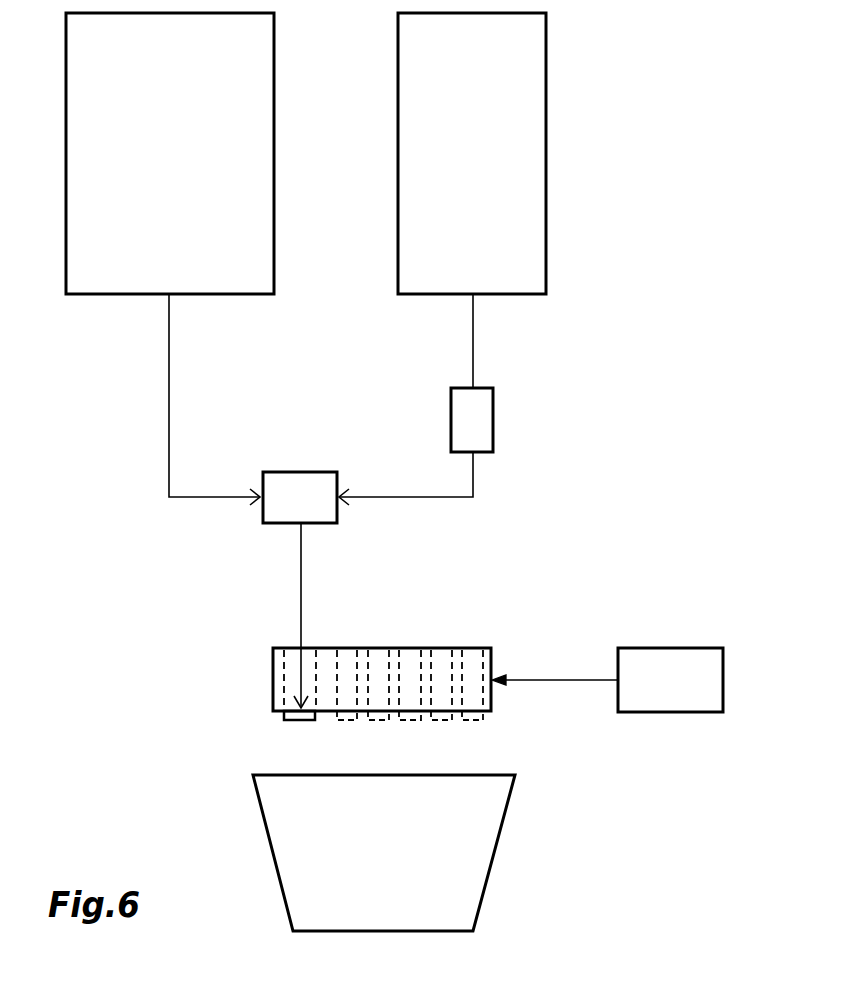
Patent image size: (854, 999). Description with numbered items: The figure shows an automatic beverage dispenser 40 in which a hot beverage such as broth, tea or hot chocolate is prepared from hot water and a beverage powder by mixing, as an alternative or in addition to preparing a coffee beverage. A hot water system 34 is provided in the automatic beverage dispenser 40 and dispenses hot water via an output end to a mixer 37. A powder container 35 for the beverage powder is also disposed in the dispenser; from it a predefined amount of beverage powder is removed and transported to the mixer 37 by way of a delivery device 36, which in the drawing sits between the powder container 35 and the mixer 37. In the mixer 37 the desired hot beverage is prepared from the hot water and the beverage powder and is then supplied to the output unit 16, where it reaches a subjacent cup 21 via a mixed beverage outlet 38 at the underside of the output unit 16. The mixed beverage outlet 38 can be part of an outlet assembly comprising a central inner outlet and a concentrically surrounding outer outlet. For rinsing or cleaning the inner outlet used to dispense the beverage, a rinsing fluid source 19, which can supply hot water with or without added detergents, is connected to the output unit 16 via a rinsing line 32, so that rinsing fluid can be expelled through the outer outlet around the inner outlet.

The output unit 16 is at (273, 700).
The rinsing fluid source 19 is at (670, 690).
The cup 21 is at (359, 871).
The rinsing line 32 is at (545, 680).
The hot water system 34 is at (151, 184).
The powder container 35 is at (453, 184).
The delivery device 36 is at (483, 420).
The mixer 37 is at (275, 513).
The mixed beverage outlet 38 is at (282, 717).
The automatic beverage dispenser 40 is at (266, 392).